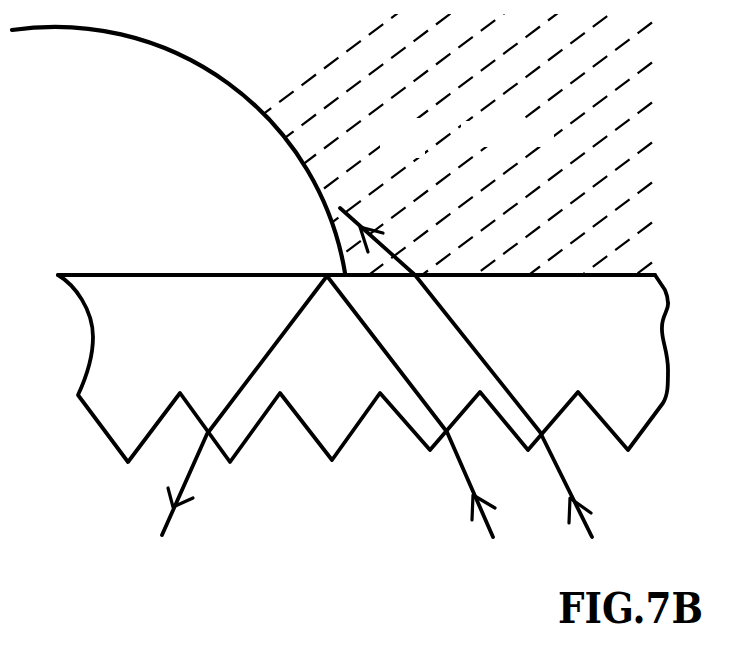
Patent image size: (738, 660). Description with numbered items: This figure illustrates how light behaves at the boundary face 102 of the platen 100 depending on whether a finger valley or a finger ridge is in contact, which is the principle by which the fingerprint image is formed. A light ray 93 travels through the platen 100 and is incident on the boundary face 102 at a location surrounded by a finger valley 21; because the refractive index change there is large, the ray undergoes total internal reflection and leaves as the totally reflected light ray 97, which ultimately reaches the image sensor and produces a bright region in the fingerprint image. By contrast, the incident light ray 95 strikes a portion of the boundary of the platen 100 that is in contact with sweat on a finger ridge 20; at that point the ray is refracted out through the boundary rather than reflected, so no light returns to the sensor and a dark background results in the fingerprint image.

The finger ridge 20 is at (420, 152).
The finger valley 21 is at (145, 124).
The boundary face 102 is at (245, 274).
The platen 100 is at (597, 340).
The totally reflected light ray 97 is at (235, 420).
The light ray 93 is at (412, 424).
The incident light ray 95 is at (473, 389).